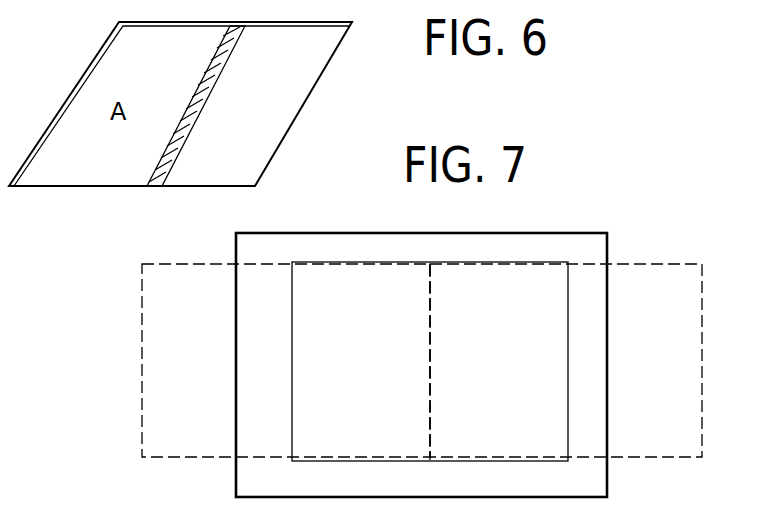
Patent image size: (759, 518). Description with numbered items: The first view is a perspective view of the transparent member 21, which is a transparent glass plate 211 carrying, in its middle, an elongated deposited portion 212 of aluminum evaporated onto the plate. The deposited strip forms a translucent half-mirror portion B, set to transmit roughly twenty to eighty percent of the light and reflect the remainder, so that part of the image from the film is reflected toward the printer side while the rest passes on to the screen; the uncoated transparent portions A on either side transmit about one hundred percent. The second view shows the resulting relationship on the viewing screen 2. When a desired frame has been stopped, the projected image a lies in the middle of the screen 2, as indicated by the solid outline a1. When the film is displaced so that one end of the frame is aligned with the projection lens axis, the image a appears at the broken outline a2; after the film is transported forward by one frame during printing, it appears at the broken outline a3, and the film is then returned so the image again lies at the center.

In FIG. 6, the transparent member 21 is at (100, 40).
In FIG. 6, the transparent glass plate 211 is at (318, 57).
In FIG. 6, the elongated deposited portion 212 is at (152, 187).
In FIG. 7, the viewing screen 2 is at (341, 258).
In FIG. 7, the projected image a is at (452, 275).
In FIG. 7, the solid outline a1 is at (525, 262).
In FIG. 7, the broken outline a2 is at (665, 266).
In FIG. 7, the broken outline a3 is at (210, 263).